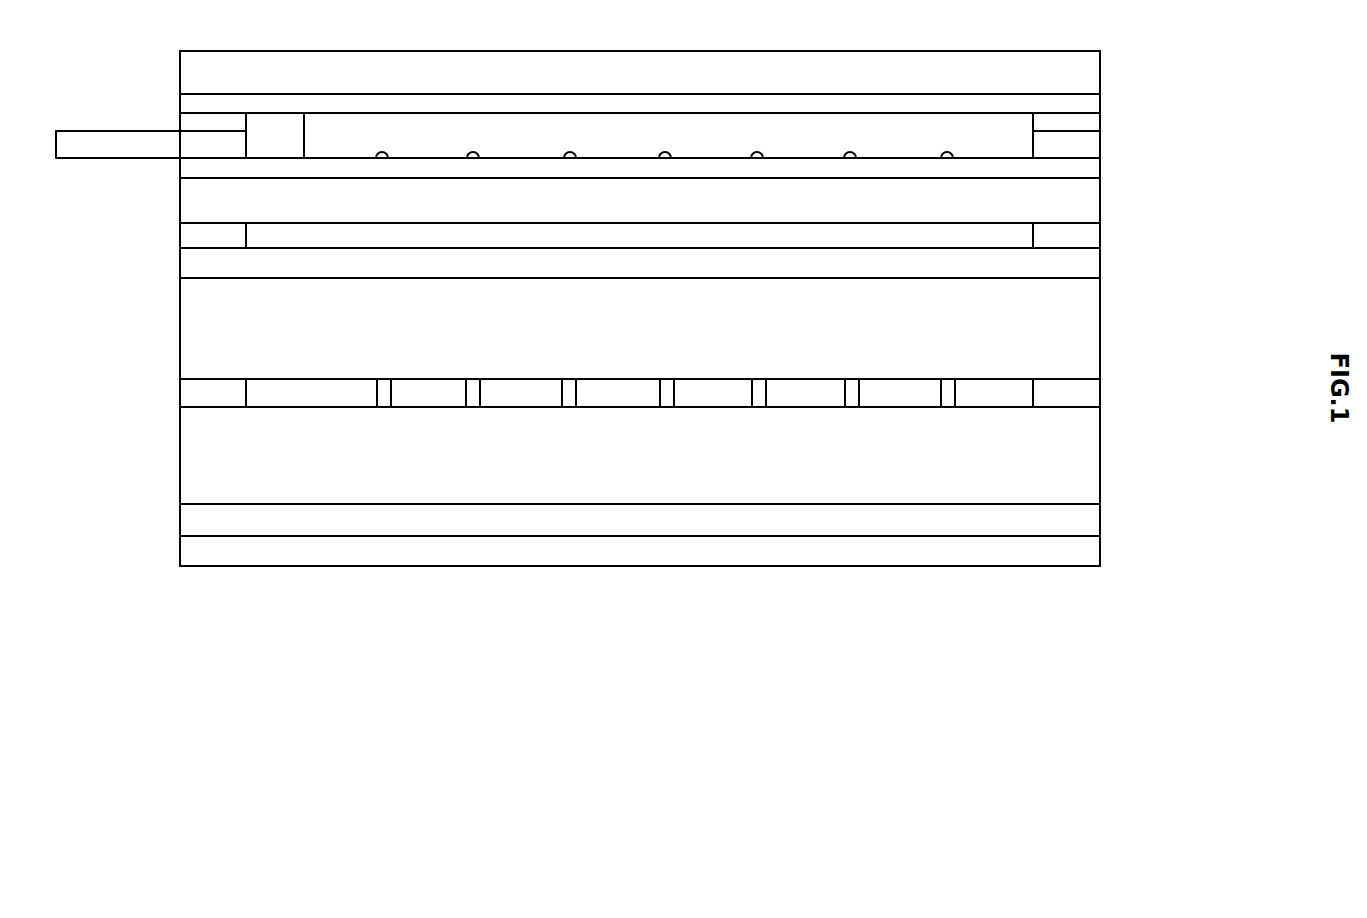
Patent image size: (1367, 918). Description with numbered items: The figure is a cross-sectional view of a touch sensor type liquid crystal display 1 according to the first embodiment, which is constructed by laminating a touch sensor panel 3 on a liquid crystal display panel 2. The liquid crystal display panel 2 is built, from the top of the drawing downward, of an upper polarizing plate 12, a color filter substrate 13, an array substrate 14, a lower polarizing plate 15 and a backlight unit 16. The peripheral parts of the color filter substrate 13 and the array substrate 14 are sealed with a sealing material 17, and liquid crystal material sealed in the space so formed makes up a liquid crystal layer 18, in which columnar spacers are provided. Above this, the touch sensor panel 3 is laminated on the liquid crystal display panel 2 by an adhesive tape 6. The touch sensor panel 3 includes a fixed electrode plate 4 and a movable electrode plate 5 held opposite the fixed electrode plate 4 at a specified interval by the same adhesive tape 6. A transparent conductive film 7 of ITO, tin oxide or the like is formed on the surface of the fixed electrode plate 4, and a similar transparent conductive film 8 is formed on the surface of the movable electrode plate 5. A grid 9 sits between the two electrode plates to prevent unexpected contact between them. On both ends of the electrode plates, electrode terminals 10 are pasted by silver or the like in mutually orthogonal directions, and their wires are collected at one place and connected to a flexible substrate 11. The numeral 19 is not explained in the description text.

The touch sensor type liquid crystal display 1 is at (590, 36).
The liquid crystal display panel 2 is at (92, 240).
The touch sensor panel 3 is at (1158, 37).
The fixed electrode plate 4 is at (1088, 197).
The movable electrode plate 5 is at (411, 75).
The adhesive tape 6 is at (194, 238).
The transparent conductive film 7 is at (1090, 168).
The transparent conductive film 8 is at (489, 104).
The grid 9 is at (758, 152).
The electrode terminals 10 is at (192, 122).
The flexible substrate 11 is at (94, 140).
The upper polarizing plate 12 is at (197, 264).
The color filter substrate 13 is at (200, 332).
The array substrate 14 is at (197, 453).
The lower polarizing plate 15 is at (187, 518).
The backlight unit 16 is at (197, 553).
The sealing material 17 is at (196, 393).
The liquid crystal layer 18 is at (1010, 380).
The slots 19 is at (476, 397).